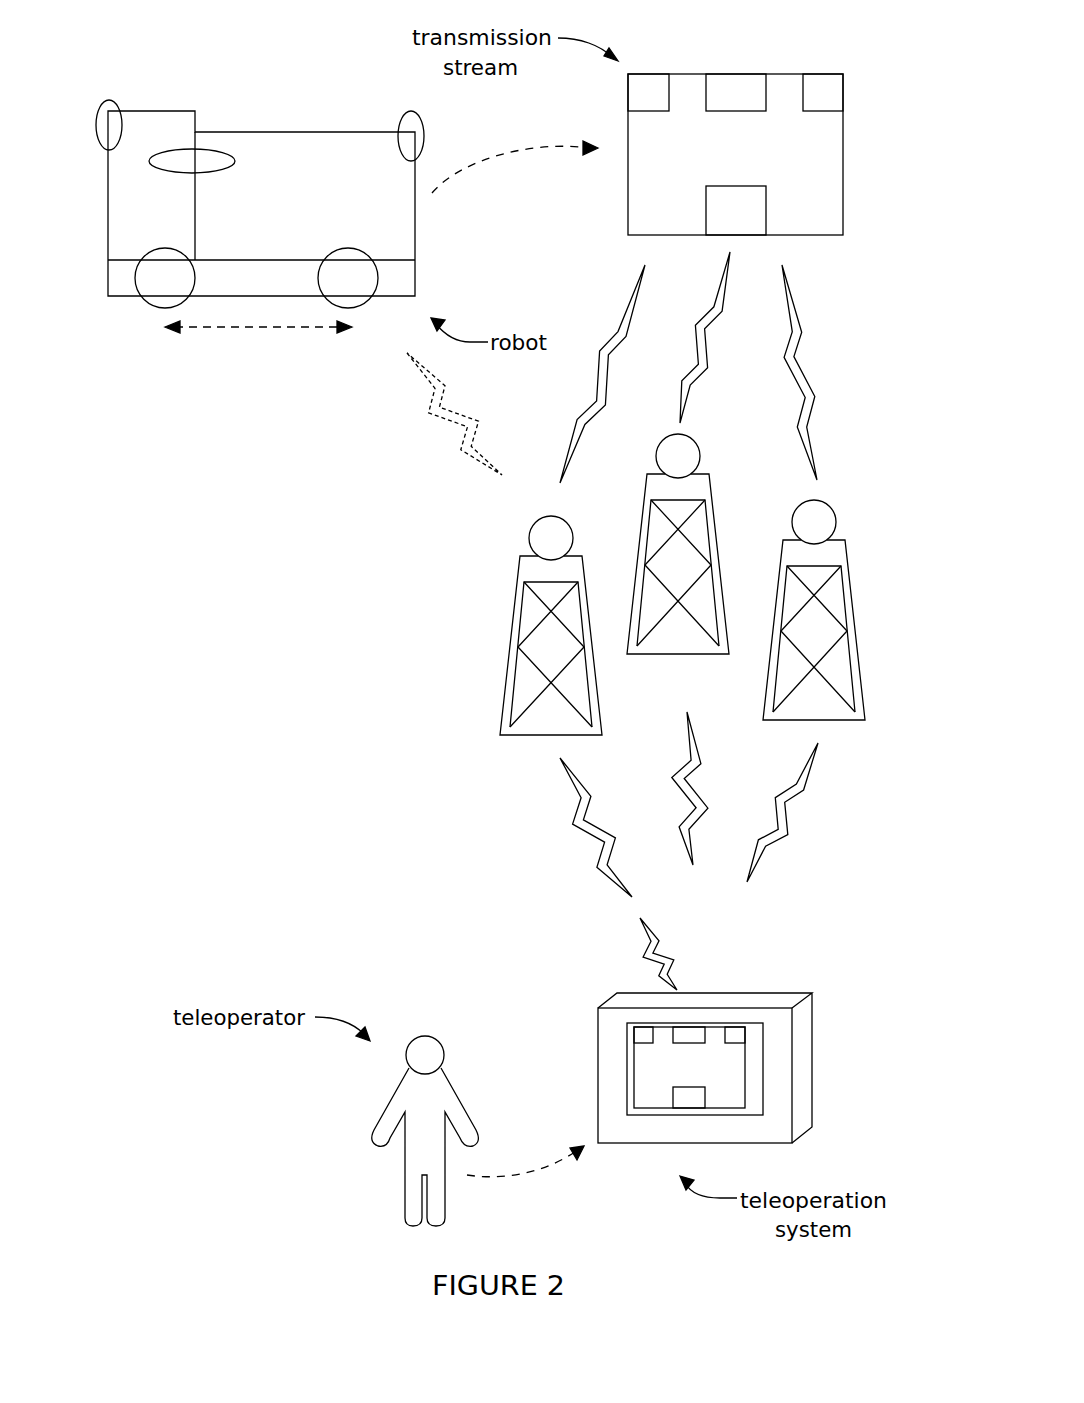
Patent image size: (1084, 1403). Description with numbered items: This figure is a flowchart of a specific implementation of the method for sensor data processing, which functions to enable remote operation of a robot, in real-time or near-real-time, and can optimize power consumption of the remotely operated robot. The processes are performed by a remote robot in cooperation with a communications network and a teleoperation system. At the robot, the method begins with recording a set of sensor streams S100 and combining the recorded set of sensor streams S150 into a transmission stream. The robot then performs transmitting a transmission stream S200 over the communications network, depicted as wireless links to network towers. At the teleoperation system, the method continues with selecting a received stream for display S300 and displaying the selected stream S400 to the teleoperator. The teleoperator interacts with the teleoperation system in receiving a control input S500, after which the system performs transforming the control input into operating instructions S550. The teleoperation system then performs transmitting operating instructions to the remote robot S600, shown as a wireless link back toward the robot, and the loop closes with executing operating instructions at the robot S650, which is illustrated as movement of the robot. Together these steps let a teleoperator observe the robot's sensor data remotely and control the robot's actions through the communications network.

The recording a set of sensor streams S100 is at (410, 132).
The combining the recorded set of sensor streams S150 is at (740, 63).
The transmitting a transmission stream S200 is at (806, 299).
The selecting a received stream for display S300 is at (646, 884).
The displaying the selected stream S400 is at (689, 1067).
The receiving a control input S500 is at (530, 1167).
The transforming the control input into operating instructions S550 is at (575, 1056).
The transmitting operating instructions to the remote robot S600 is at (435, 425).
The executing operating instructions at the robot S650 is at (252, 330).